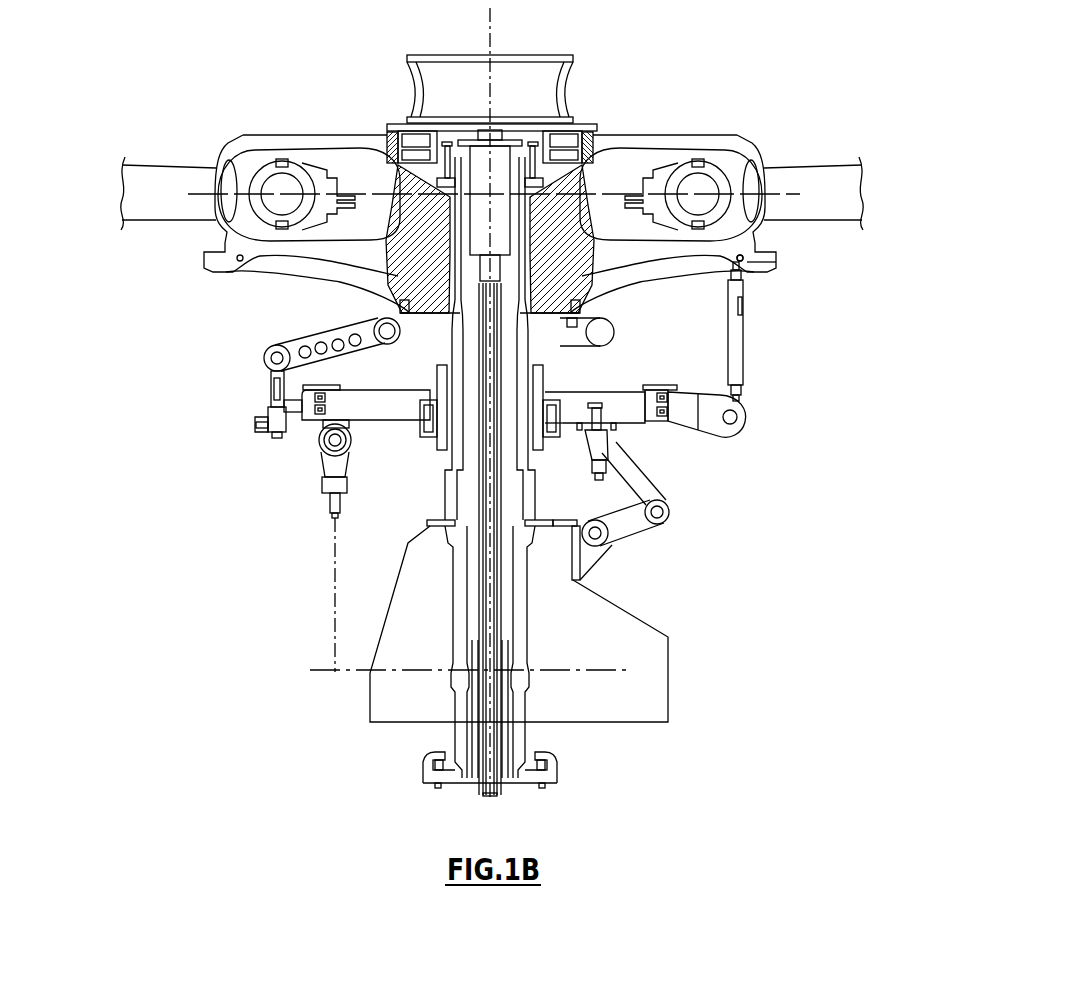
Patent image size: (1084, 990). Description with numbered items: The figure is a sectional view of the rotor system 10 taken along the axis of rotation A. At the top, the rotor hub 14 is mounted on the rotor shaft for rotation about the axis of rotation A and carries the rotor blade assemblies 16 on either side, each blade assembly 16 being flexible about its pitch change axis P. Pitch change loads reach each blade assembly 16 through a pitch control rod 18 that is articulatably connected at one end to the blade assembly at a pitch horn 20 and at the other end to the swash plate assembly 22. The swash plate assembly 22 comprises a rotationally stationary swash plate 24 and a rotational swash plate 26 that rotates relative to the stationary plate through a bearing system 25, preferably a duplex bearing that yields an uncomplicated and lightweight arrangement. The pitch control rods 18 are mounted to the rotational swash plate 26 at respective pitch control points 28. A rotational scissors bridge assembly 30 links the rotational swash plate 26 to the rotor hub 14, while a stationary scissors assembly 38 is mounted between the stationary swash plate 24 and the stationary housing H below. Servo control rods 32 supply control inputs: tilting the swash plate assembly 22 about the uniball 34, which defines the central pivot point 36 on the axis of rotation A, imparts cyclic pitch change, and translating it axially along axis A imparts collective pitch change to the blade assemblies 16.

The rotor system 10 is at (822, 348).
The rotor hub 14 is at (608, 119).
The rotor blade assembly 16 is at (275, 180).
The pitch control rod 18 is at (740, 336).
The pitch horn 20 is at (770, 263).
The swash plate assembly 22 is at (797, 413).
The rotationally stationary swash plate 24 is at (653, 440).
The bearing system 25 is at (673, 405).
The rotational swash plate 26 is at (715, 427).
The pitch control point 28 is at (733, 422).
The rotational scissors bridge assembly 30 is at (290, 328).
The servo control rod 32 is at (356, 510).
The uniball 34 is at (438, 390).
The central pivot point 36 is at (487, 422).
The stationary scissors assembly 38 is at (663, 545).
The axis of rotation A is at (488, 45).
The pitch change axis P is at (789, 198).
The stationary housing H is at (616, 627).